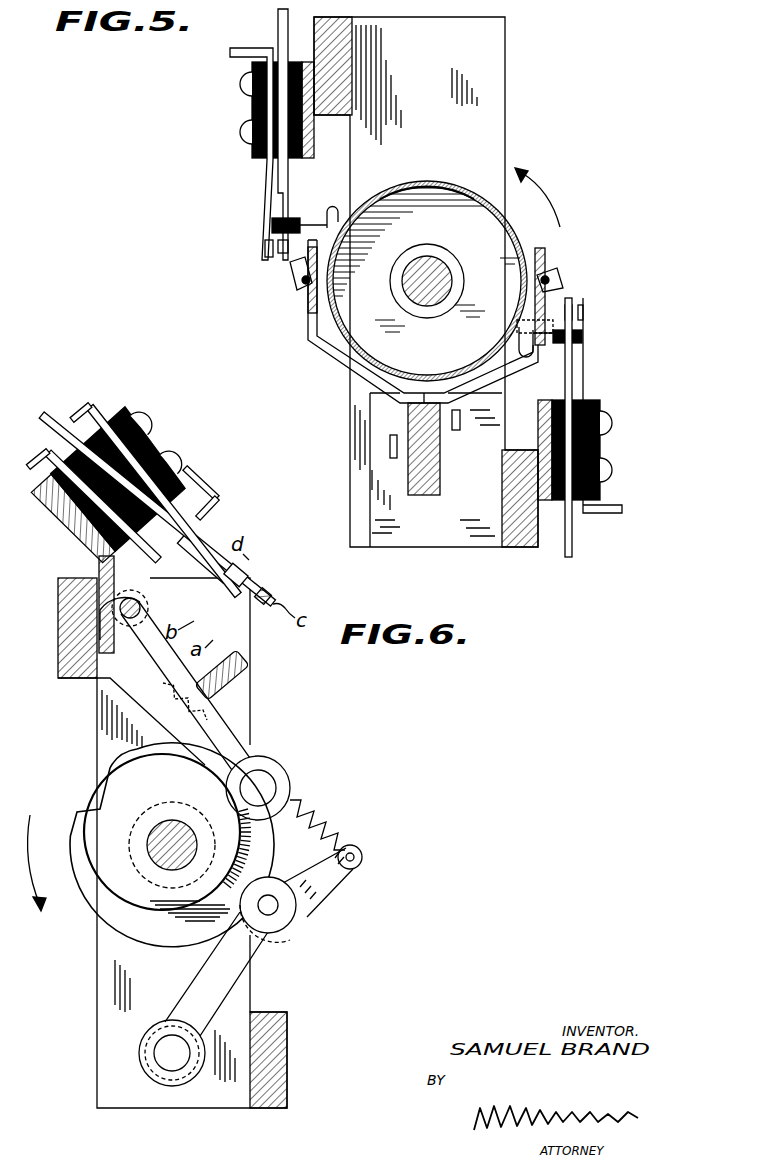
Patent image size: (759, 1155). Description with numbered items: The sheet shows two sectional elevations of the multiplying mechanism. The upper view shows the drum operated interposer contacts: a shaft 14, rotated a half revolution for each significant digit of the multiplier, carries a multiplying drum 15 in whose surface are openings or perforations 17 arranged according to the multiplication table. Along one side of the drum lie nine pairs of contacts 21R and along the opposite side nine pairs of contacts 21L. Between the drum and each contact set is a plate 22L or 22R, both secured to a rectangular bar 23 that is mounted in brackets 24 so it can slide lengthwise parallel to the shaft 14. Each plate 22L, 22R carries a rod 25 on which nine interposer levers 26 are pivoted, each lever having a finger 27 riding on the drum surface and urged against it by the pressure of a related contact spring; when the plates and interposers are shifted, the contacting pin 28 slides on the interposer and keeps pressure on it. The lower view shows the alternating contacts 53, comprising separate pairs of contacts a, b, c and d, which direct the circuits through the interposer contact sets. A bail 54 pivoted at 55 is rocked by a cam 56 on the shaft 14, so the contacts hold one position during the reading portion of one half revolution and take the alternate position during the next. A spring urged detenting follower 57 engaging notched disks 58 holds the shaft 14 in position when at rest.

In FIG. 5, the shaft 14 is at (432, 270).
In FIG. 6, the shaft 14 is at (152, 862).
In FIG. 5, the multiplying drum 15 is at (438, 193).
In FIG. 5, the openings or perforations 17 is at (433, 180).
In FIG. 5, the contacts 21L is at (267, 264).
In FIG. 5, the contacts 21R is at (575, 305).
In FIG. 5, the plate 22L is at (310, 340).
In FIG. 5, the plate 22R is at (535, 360).
In FIG. 5, the rectangular bar 23 is at (440, 490).
In FIG. 5, the brackets 24 is at (376, 488).
In FIG. 5, the rod 25 is at (305, 284).
In FIG. 5, the interposer levers 26 is at (292, 265).
In FIG. 5, the finger 27 is at (330, 207).
In FIG. 5, the contacting pin 28 is at (272, 228).
In FIG. 6, the alternating contacts 53 is at (256, 569).
In FIG. 6, the bail 54 is at (243, 679).
In FIG. 6, the pivot 55 is at (132, 621).
In FIG. 6, the cam 56 is at (117, 793).
In FIG. 6, the detenting follower 57 is at (300, 915).
In FIG. 6, the notched disks 58 is at (145, 930).